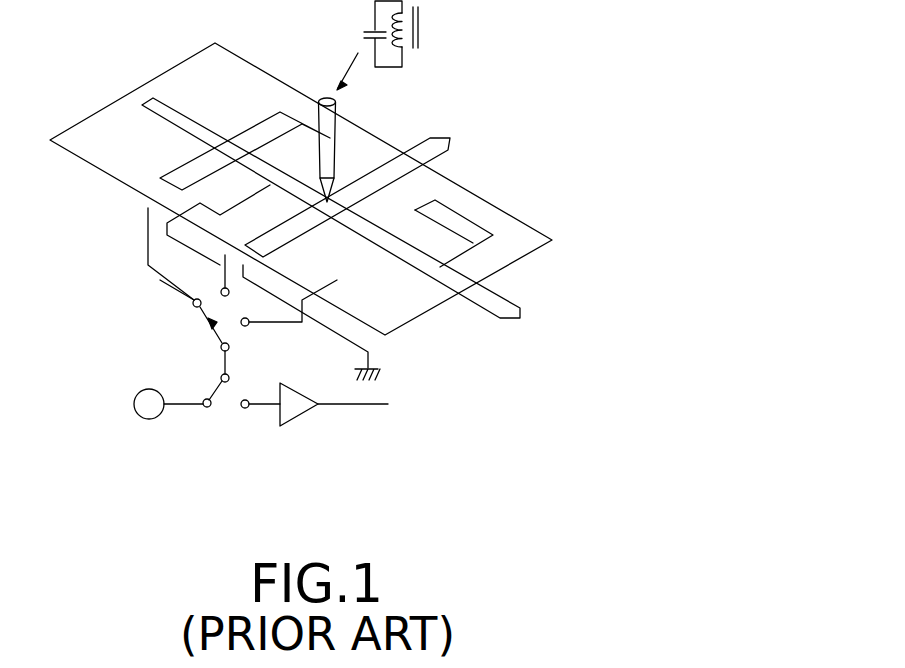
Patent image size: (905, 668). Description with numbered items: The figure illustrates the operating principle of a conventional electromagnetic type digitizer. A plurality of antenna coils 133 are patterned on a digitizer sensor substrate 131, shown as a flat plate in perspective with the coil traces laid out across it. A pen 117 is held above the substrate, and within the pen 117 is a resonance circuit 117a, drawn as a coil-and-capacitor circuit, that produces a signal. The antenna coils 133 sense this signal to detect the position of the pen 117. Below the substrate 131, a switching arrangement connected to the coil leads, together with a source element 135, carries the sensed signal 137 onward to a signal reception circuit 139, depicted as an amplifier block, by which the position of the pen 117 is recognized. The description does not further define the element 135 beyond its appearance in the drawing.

The pen 117 is at (330, 98).
The resonance circuit 117a is at (432, 23).
The digitizer sensor substrate 131 is at (93, 130).
The antenna coils 133 is at (463, 215).
The signal source 135 is at (140, 387).
The sensed signal 137 is at (227, 402).
The signal reception circuit 139 is at (300, 417).